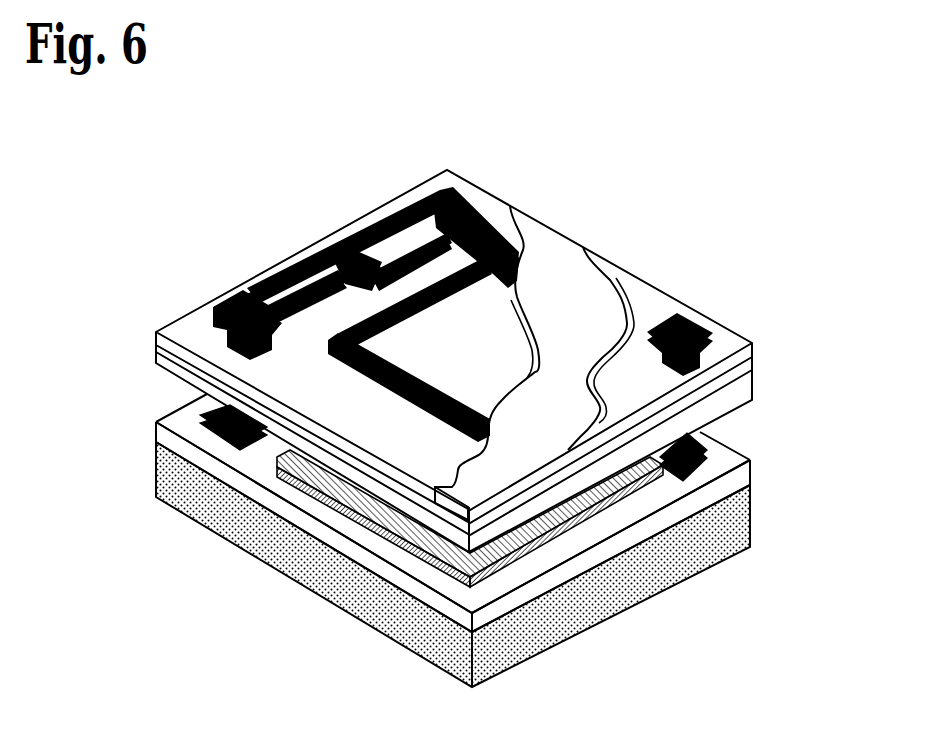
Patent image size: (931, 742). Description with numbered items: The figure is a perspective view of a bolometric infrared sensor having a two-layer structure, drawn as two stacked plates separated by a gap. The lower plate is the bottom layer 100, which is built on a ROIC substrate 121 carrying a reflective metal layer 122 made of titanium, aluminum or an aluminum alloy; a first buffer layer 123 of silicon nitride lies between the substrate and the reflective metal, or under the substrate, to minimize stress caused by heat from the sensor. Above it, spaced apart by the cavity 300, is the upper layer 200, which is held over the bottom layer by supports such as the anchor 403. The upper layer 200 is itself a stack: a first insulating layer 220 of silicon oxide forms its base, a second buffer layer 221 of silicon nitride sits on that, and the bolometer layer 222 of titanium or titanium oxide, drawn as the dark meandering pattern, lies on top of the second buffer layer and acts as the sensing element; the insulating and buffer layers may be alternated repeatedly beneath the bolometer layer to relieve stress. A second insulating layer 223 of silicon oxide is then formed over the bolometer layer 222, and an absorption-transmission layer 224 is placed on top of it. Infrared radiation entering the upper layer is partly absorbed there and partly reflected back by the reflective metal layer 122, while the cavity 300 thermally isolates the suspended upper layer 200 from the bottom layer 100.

The bottom layer 100 is at (775, 440).
The ROIC substrate 121 is at (560, 603).
The reflective metal layer 122 is at (607, 507).
The first buffer layer 123 is at (583, 560).
The upper layer 200 is at (775, 340).
The first insulating layer 220 is at (157, 348).
The second buffer layer 221 is at (483, 212).
The bolometer layer 222 is at (447, 175).
The second insulating layer 223 is at (547, 263).
The absorption-transmission layer 224 is at (650, 303).
The cavity 300 is at (148, 378).
The anchor 403 is at (703, 430).